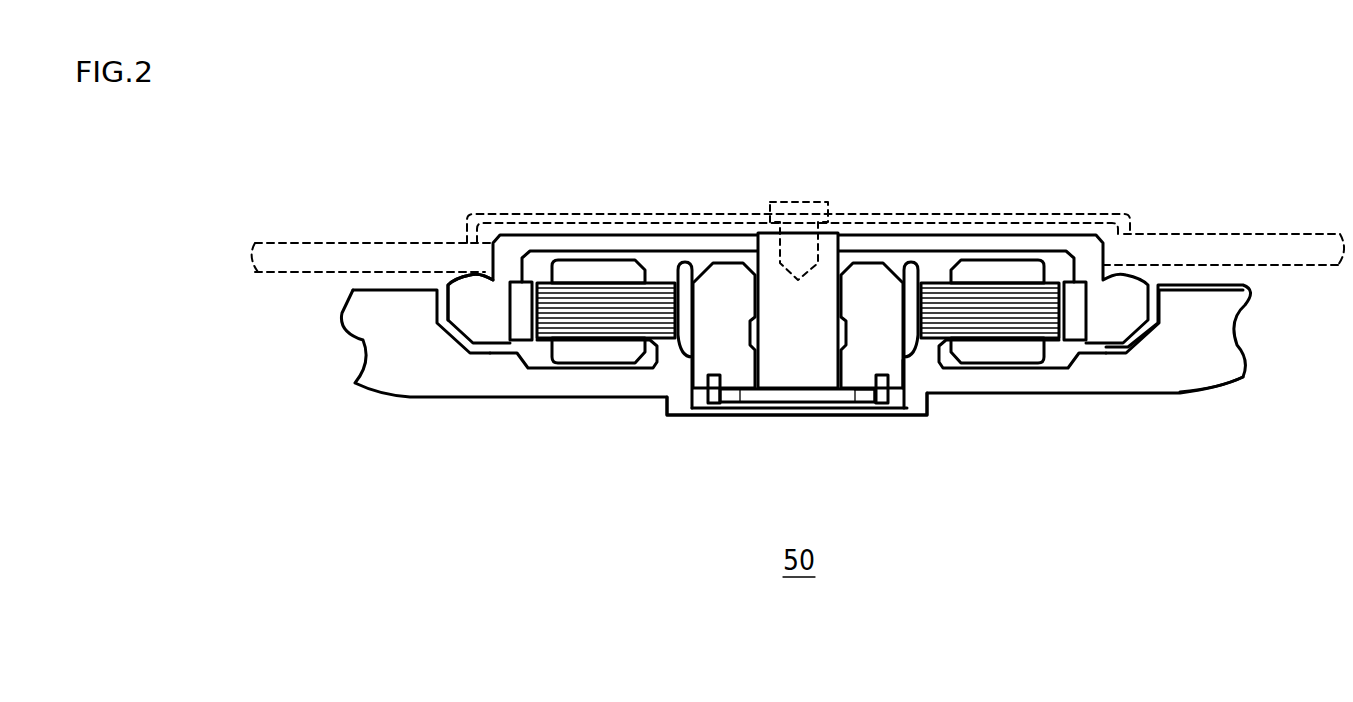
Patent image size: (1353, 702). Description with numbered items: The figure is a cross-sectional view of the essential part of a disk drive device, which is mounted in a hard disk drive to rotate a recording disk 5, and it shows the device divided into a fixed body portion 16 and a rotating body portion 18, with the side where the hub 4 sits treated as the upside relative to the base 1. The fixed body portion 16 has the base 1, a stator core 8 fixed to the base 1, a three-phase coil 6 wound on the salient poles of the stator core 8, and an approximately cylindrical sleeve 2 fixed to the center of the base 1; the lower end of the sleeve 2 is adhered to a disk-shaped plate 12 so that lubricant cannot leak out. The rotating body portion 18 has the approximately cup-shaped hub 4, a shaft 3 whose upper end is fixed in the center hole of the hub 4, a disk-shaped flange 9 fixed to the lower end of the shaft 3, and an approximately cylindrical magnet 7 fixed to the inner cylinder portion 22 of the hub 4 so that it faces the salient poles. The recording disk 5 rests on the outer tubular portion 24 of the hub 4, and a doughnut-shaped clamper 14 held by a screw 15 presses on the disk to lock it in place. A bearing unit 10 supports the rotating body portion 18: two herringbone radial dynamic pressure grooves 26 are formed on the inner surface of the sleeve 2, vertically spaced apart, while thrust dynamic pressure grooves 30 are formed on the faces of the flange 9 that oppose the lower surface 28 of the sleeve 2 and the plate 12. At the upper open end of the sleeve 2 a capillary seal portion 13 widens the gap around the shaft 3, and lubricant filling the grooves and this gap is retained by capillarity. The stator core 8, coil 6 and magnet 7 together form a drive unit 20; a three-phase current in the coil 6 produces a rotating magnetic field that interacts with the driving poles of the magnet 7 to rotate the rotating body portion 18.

The base 1 is at (1143, 383).
The sleeve 2 is at (740, 367).
The shaft 3 is at (802, 357).
The hub 4 is at (1053, 238).
The recording disk 5 is at (1207, 247).
The coil 6 is at (1030, 355).
The magnet 7 is at (1072, 337).
The stator core 8 is at (980, 317).
The flange 9 is at (880, 398).
The bearing unit 10 is at (723, 421).
The plate 12 is at (742, 417).
The capillary seal portion 13 is at (747, 267).
The clamper 14 is at (903, 222).
The screw 15 is at (795, 202).
The fixed body portion 16 is at (1218, 414).
The rotating body portion 18 is at (838, 198).
The drive unit 20 is at (540, 346).
The inner cylinder portion 22 is at (1095, 337).
The outer tubular portion 24 is at (467, 273).
The radial dynamic pressure groove 26 is at (753, 360).
The lower surface 28 is at (865, 383).
The thrust dynamic pressure groove 30 is at (867, 384).